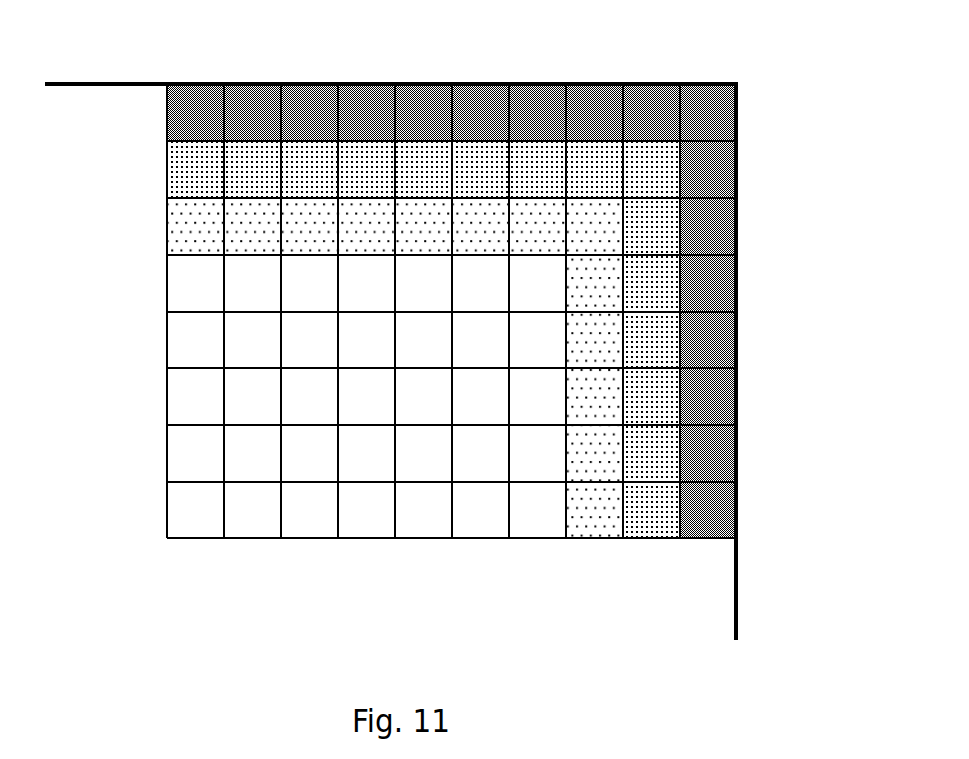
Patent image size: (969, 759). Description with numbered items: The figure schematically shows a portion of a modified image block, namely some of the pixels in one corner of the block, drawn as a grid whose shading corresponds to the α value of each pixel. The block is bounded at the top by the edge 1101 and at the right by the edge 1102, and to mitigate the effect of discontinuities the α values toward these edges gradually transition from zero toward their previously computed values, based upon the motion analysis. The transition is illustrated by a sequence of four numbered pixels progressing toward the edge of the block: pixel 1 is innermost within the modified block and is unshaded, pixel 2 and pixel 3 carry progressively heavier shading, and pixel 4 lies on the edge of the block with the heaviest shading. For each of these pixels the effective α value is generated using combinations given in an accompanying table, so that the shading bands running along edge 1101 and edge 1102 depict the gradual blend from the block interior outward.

The edge of modified block 1101 is at (463, 82).
The edge of modified block 1102 is at (738, 387).
The pixel 4 is at (452, 311).
The pixel 3 is at (423, 339).
The pixel 2 is at (395, 368).
The pixel 1 is at (366, 396).